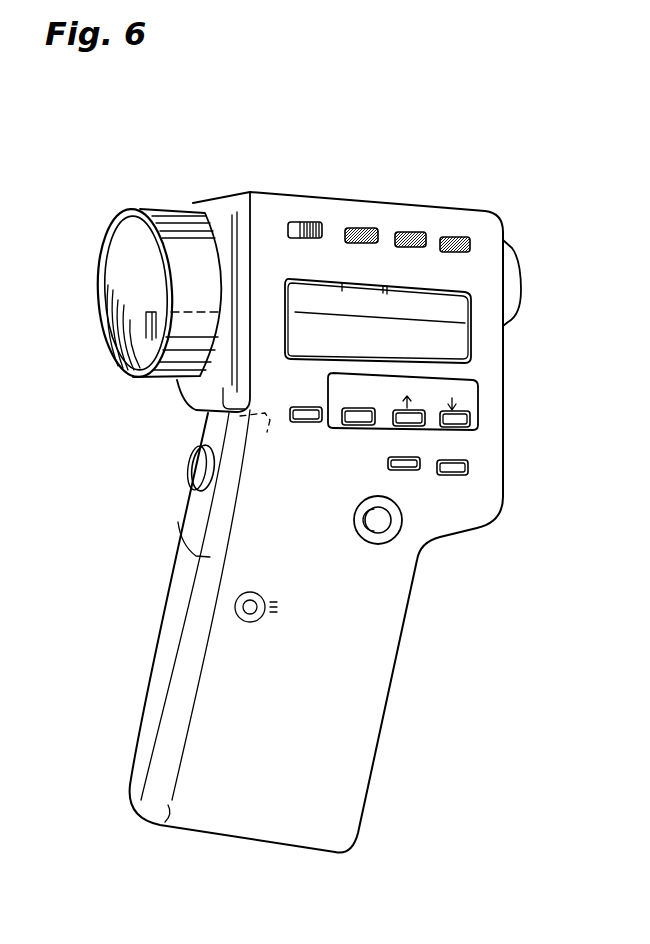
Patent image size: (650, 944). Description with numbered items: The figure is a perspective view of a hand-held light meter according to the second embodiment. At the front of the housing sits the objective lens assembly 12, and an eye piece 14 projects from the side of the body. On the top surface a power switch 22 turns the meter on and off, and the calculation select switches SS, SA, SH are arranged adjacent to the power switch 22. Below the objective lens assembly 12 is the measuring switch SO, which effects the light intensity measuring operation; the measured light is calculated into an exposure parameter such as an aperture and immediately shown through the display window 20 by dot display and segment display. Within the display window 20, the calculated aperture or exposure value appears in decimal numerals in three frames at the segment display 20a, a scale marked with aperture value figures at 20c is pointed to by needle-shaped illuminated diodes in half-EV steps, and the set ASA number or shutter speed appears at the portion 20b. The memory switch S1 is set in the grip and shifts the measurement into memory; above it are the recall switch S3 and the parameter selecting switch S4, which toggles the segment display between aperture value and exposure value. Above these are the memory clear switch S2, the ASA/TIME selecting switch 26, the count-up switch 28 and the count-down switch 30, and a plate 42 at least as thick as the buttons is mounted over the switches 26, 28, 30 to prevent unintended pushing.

The objective lens assembly 12 is at (172, 220).
The eye piece 14 is at (510, 290).
The display window 20 is at (363, 341).
The segment display frames 20a is at (310, 338).
The set value display portion 20b is at (452, 340).
The aperture value scale 20c is at (355, 297).
The power switch 22 is at (313, 222).
The calculation select switch SS is at (370, 229).
The calculation select switch SA is at (418, 233).
The calculation select switch SH is at (463, 238).
The plate 42 is at (480, 385).
The ASA/TIME selecting switch 26 is at (355, 426).
The count-up switch 28 is at (415, 425).
The count-down switch 30 is at (455, 418).
The memory clear switch S2 is at (300, 423).
The recall switch S3 is at (412, 470).
The parameter selecting switch S4 is at (462, 475).
The memory switch S1 is at (380, 530).
The light measuring switch SO is at (190, 472).